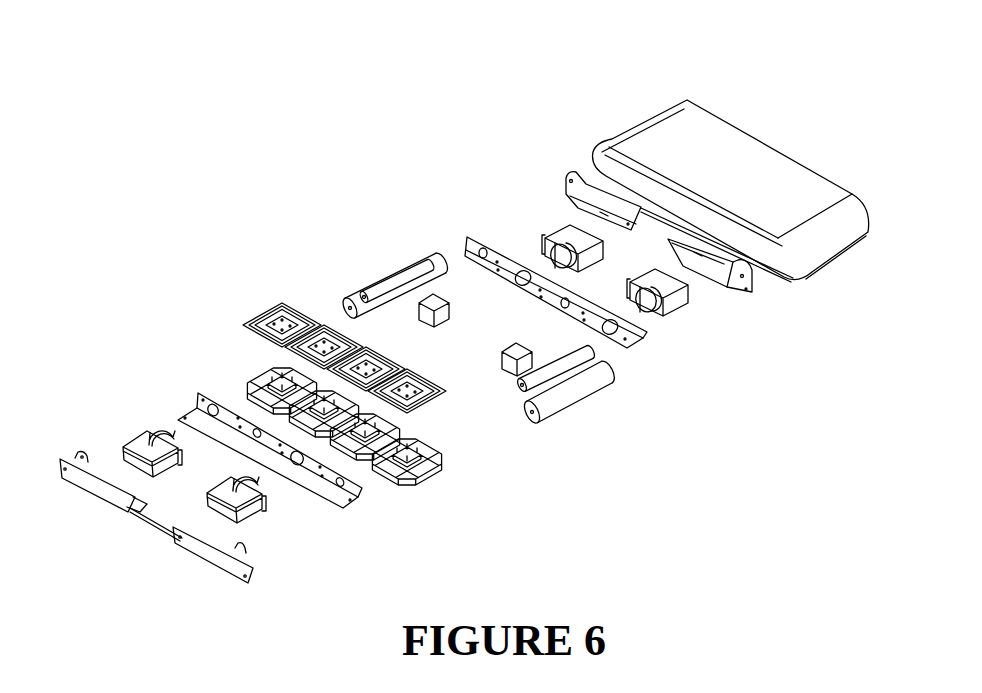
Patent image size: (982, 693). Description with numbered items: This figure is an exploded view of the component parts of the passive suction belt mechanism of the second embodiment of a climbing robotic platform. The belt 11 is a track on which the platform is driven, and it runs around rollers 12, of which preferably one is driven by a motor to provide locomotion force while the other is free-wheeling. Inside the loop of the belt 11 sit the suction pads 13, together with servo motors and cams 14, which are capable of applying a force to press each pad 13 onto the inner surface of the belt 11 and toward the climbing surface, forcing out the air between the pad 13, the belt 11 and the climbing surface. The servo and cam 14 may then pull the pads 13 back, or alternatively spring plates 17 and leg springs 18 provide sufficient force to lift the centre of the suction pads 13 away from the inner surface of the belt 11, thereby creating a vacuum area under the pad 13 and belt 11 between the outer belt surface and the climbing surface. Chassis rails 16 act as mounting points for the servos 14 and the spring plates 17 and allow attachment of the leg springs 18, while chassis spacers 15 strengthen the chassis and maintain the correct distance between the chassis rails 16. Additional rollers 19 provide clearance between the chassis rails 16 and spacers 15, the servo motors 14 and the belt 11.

The belt 11 is at (660, 122).
The rollers 12 is at (342, 297).
The suction pads 13 is at (248, 387).
The servo motors and cams 14 is at (140, 443).
The chassis spacers 15 is at (438, 293).
The chassis rails 16 is at (193, 417).
The spring plates 17 is at (275, 307).
The leg springs 18 is at (578, 173).
The additional rollers 19 is at (413, 260).